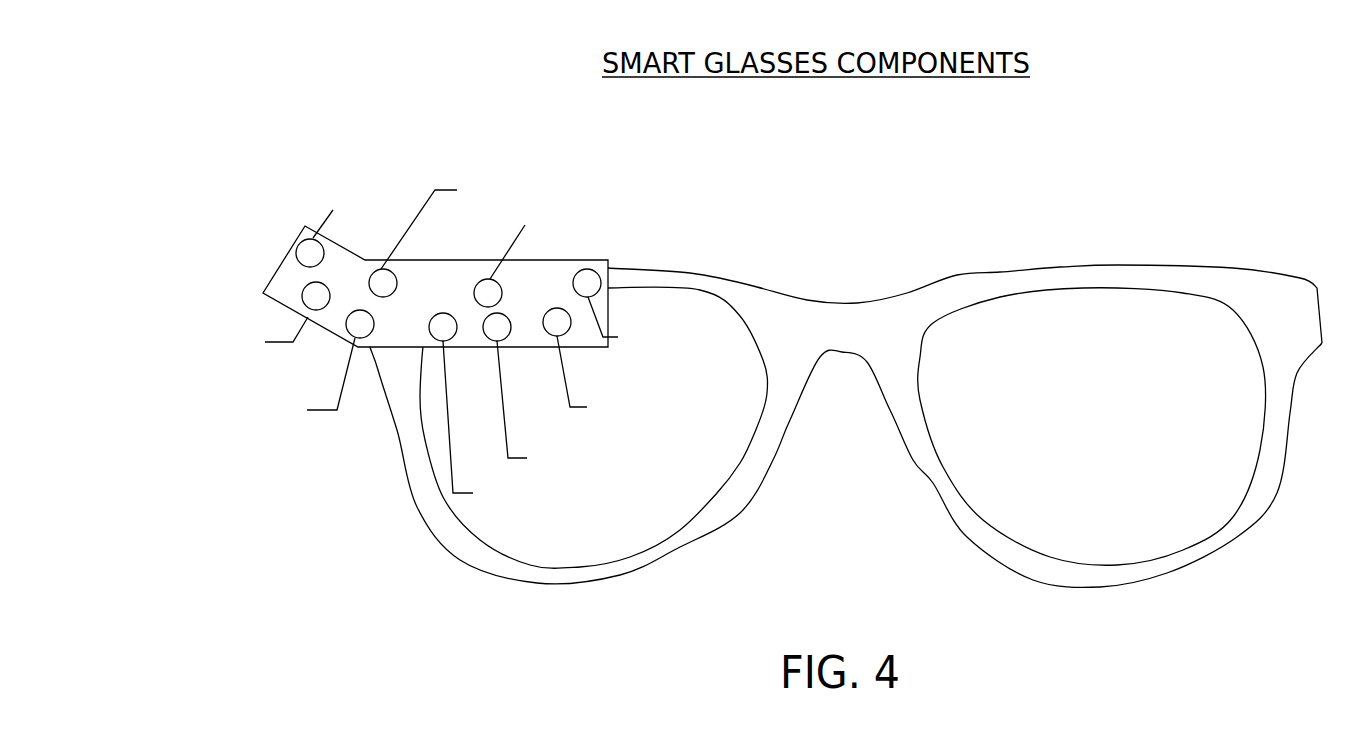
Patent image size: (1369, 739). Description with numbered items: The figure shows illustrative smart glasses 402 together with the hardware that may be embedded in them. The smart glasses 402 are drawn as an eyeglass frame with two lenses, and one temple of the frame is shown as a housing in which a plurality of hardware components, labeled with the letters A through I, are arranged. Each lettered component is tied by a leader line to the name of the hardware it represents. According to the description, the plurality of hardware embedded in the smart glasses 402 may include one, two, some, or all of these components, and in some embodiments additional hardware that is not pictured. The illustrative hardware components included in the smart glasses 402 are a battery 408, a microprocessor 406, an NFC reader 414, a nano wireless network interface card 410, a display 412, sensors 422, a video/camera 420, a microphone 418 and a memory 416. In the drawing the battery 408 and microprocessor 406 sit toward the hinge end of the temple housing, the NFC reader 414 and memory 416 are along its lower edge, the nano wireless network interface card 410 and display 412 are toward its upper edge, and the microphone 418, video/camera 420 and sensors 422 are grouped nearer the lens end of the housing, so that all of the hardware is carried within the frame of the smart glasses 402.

The smart glasses 402 is at (1117, 265).
The microprocessor 406 is at (167, 323).
The battery 408 is at (297, 197).
The nano wireless network interface card 410 is at (910, 186).
The display 412 is at (625, 232).
The NFC reader 414 is at (228, 427).
The memory 416 is at (530, 507).
The microphone 418 is at (637, 473).
The video/camera 420 is at (670, 405).
The sensors 422 is at (723, 340).